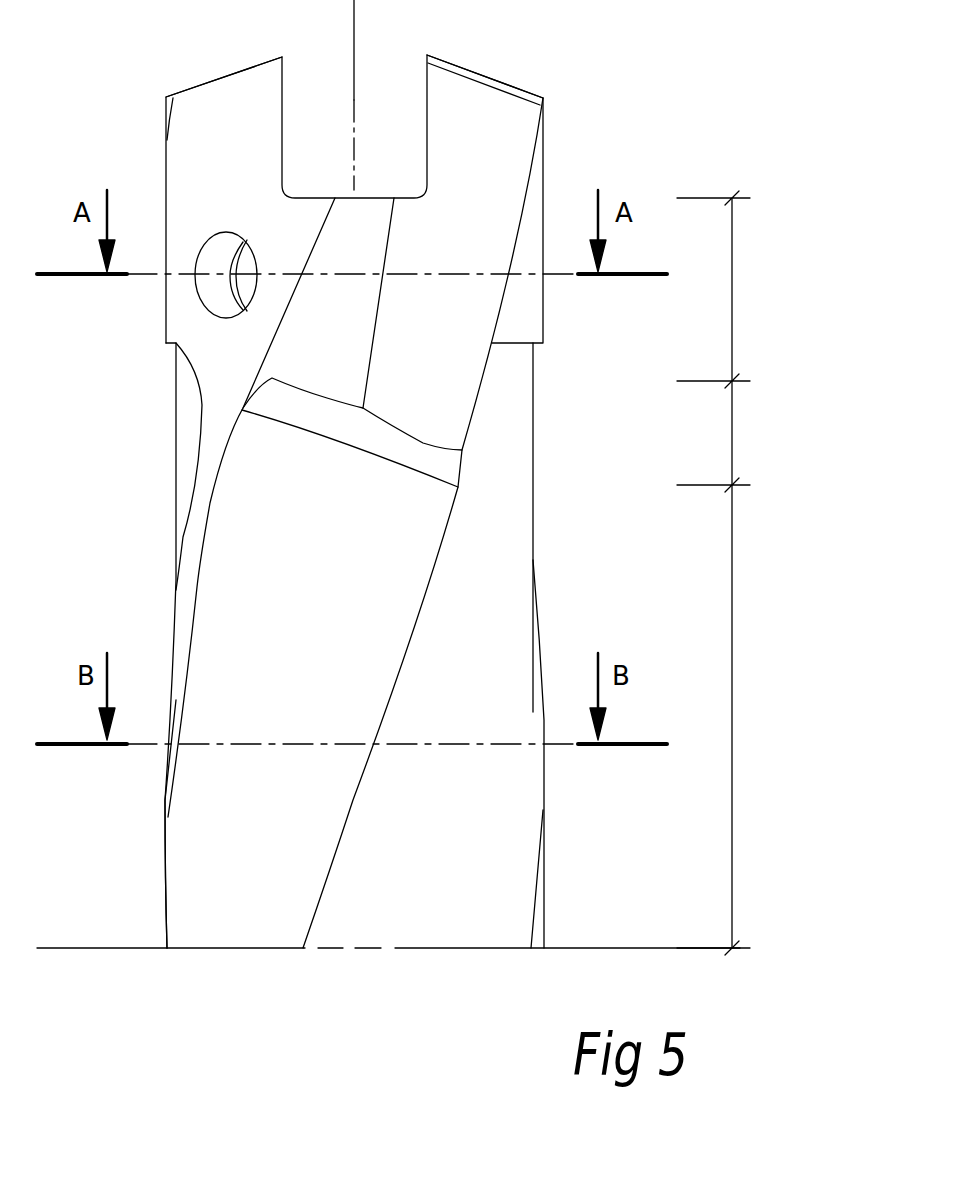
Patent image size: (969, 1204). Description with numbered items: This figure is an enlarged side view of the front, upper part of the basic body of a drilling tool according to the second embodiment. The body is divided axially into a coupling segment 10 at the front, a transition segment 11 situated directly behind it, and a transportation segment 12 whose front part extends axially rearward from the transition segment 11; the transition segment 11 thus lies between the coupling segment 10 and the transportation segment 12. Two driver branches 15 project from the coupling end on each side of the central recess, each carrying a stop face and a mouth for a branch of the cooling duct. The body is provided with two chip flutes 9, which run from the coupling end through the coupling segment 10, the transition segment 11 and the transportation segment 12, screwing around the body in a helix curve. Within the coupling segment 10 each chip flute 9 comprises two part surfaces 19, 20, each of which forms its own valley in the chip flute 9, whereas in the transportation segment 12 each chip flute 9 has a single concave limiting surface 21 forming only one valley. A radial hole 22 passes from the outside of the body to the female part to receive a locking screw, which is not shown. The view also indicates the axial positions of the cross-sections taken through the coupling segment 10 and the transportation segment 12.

The chip flute 9 is at (252, 527).
The coupling segment 10 is at (727, 289).
The transition segment 11 is at (727, 436).
The transportation segment 12 is at (727, 720).
The driver branch 15 is at (237, 110).
The part surface 19 is at (475, 295).
The part surface 20 is at (322, 337).
The concave limiting surface 21 is at (205, 813).
The radial hole 22 is at (215, 292).